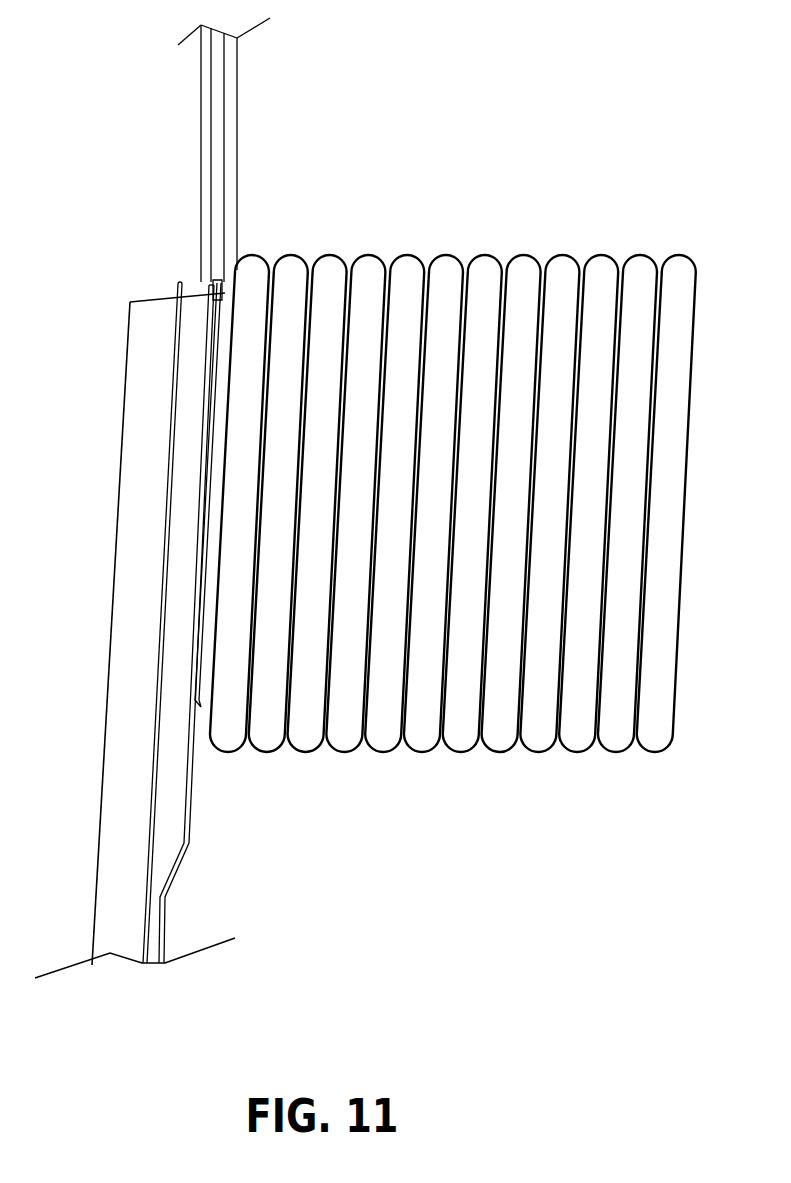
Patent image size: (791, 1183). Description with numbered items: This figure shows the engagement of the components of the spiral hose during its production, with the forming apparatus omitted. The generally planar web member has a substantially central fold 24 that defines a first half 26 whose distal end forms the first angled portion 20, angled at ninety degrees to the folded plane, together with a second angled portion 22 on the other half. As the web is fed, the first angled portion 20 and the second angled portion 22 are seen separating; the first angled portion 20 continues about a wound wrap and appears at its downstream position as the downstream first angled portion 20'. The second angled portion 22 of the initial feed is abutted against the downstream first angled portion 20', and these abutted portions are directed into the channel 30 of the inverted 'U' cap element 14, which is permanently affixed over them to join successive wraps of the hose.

The cap element 14 is at (203, 63).
The channel 30 is at (225, 122).
The first angled portion 20 is at (117, 606).
The downstream first angled portion 20' is at (243, 503).
The second angled portion 22 is at (215, 283).
The central fold 24 is at (90, 922).
The first half 26 is at (117, 872).